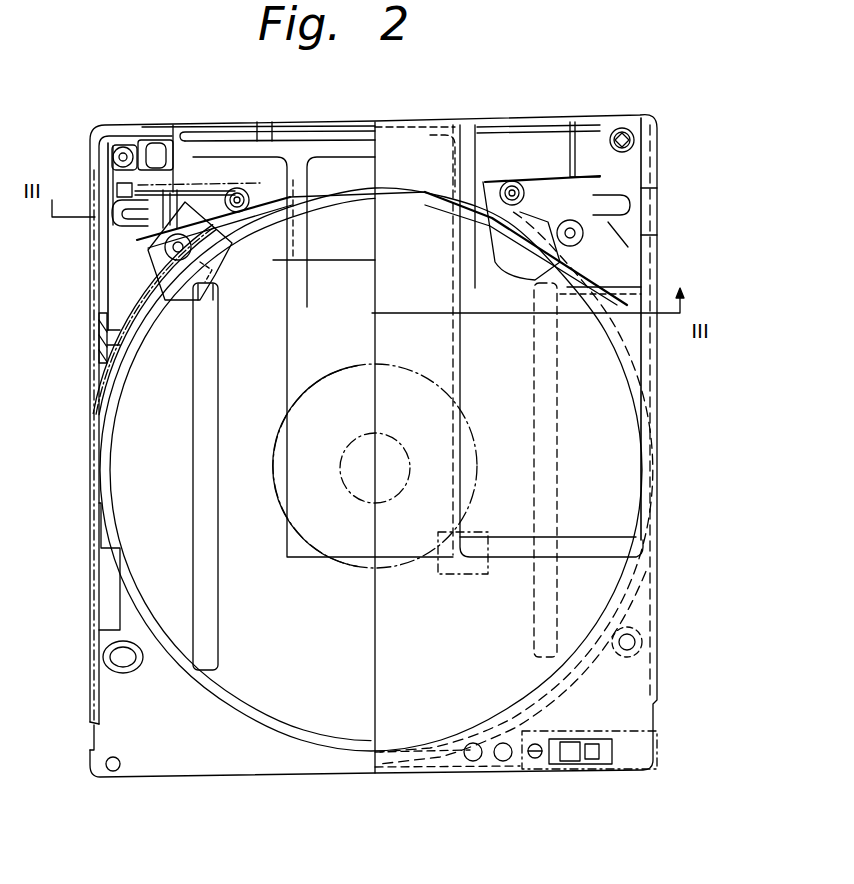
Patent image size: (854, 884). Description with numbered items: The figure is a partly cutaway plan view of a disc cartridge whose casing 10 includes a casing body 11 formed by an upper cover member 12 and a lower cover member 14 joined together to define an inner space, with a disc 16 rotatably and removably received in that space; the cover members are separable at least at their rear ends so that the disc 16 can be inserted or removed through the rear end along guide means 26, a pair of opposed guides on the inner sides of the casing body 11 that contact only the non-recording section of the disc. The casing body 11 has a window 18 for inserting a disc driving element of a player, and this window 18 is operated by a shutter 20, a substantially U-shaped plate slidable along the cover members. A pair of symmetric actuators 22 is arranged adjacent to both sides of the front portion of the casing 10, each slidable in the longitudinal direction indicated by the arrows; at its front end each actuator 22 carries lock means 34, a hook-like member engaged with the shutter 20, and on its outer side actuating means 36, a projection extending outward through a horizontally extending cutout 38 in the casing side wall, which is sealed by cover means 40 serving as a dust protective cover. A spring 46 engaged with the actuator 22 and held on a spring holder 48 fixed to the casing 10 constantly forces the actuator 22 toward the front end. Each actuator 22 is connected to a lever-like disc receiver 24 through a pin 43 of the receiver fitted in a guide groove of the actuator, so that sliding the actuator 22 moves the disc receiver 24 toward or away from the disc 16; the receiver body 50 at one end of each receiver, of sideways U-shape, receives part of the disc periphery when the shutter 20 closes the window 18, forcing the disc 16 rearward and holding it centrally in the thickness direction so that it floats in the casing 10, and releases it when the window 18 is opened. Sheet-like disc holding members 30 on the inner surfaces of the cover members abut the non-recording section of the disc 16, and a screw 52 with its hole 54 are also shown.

The casing 10 is at (668, 105).
The casing body 11 is at (267, 777).
The upper cover member 12 is at (644, 609).
The lower cover member 14 is at (103, 697).
The disc 16 is at (110, 541).
The window 18 is at (416, 125).
The shutter 20 is at (452, 373).
The actuator 22 is at (100, 200).
The disc receiver 24 is at (222, 268).
The guide means 26 is at (100, 604).
The disc holding member 30 is at (193, 456).
The lock means 34 is at (172, 128).
The actuating means 36 is at (99, 208).
The cutout 38 is at (99, 284).
The cover means 40 is at (107, 340).
The pin 43 is at (147, 345).
The spring 46 is at (193, 186).
The spring holder 48 is at (512, 178).
The receiver body 50 is at (584, 227).
The screw 52 is at (622, 128).
The hole 54 is at (117, 777).